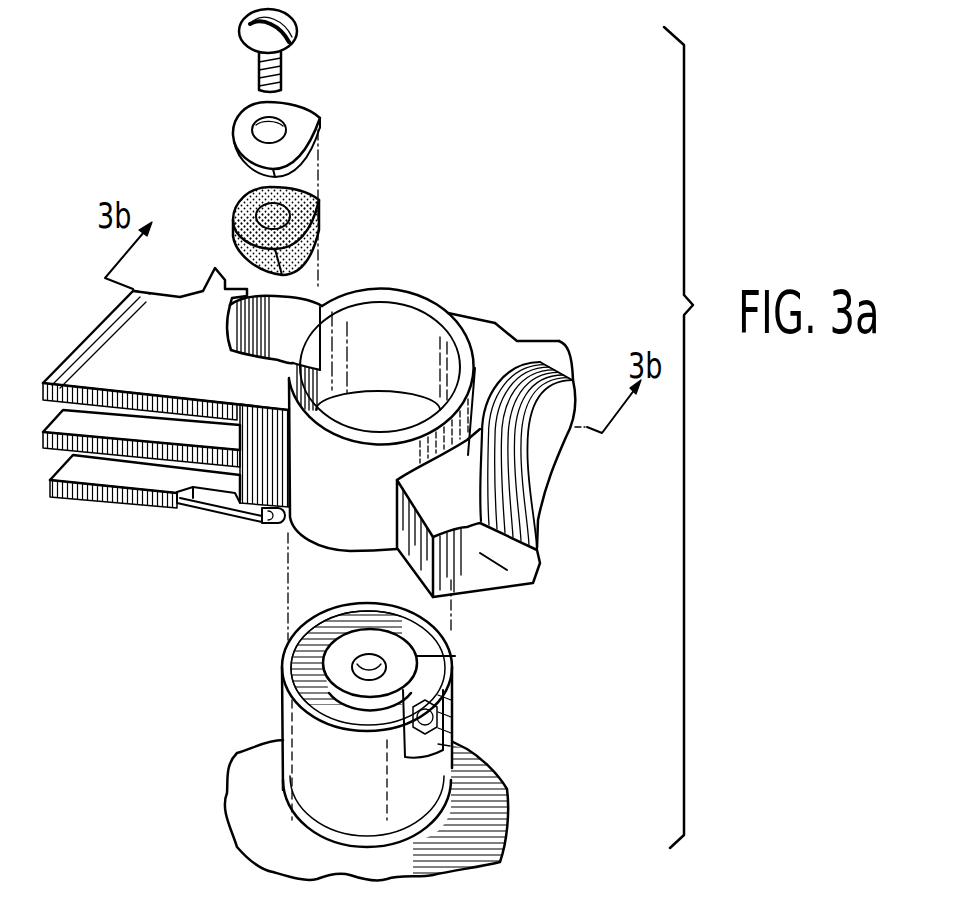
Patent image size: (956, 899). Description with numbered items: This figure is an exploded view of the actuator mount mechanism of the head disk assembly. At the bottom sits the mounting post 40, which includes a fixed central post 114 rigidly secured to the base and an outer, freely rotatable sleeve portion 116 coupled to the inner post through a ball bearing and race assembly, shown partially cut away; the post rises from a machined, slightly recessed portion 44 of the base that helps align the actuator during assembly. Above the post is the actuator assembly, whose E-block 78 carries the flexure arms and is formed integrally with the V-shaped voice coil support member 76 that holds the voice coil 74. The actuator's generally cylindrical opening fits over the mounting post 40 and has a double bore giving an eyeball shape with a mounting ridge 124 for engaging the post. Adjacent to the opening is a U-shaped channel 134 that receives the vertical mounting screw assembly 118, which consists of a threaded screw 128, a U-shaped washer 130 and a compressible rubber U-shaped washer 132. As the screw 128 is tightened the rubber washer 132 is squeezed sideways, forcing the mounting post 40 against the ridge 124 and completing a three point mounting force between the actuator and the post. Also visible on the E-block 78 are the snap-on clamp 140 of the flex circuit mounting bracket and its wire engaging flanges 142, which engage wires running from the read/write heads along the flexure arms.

The mounting screw assembly 118 is at (218, 5).
The threaded screw 128 is at (284, 57).
The U-shaped washer 130 is at (320, 132).
The compressible U-shaped washer 132 is at (319, 218).
The U-shaped channel 134 is at (287, 323).
The wire engaging flanges 142 is at (394, 320).
The mounting ridge 124 is at (432, 348).
The voice coil support member 76 is at (517, 355).
The voice coil 74 is at (545, 492).
The E-block 78 is at (102, 497).
The snap-on clamp 140 is at (217, 510).
The mounting post 40 is at (265, 697).
The fixed central post 114 is at (405, 663).
The rotatable sleeve portion 116 is at (442, 727).
The recessed portion 44 is at (267, 830).